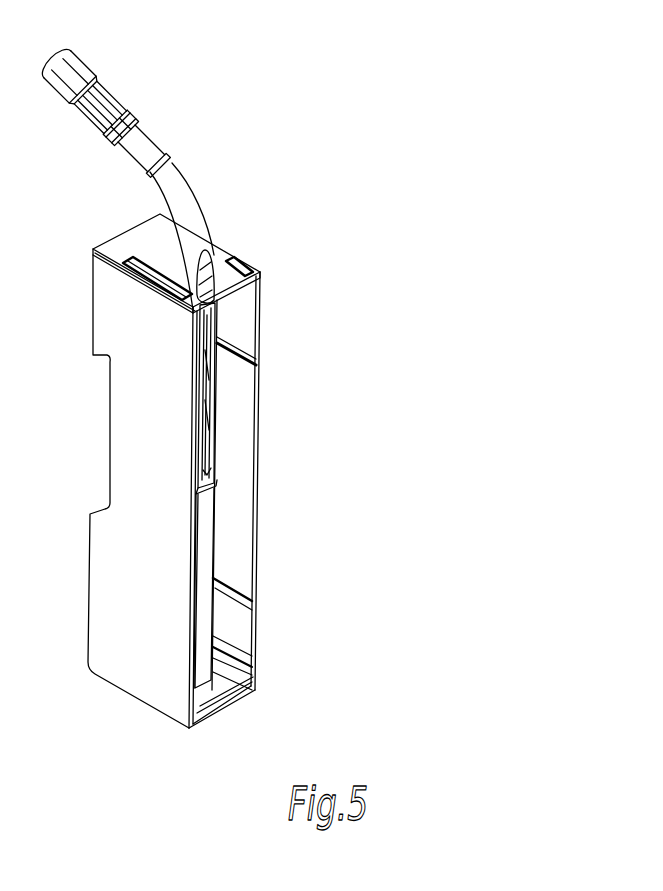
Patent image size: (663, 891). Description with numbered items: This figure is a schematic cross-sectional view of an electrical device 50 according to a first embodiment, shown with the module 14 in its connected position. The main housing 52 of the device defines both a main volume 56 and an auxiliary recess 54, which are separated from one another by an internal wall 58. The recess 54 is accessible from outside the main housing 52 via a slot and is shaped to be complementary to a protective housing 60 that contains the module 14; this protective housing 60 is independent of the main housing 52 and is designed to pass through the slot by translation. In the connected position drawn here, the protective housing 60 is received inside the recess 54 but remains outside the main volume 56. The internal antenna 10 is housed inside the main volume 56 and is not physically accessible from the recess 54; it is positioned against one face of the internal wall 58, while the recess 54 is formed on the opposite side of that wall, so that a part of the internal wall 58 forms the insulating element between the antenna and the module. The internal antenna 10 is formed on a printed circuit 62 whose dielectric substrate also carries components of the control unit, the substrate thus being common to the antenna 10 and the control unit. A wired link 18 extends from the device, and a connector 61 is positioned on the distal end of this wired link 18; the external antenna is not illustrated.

The internal antenna 10 is at (215, 420).
The module 14 is at (193, 455).
The wired link 18 is at (183, 195).
The electrical device 50 is at (348, 222).
The main housing 52 is at (193, 365).
The auxiliary recess 54 is at (136, 243).
The main volume 56 is at (206, 602).
The internal wall 58 is at (207, 457).
The protective housing 60 is at (193, 410).
The connector 61 is at (107, 98).
The printed circuit 62 is at (205, 532).